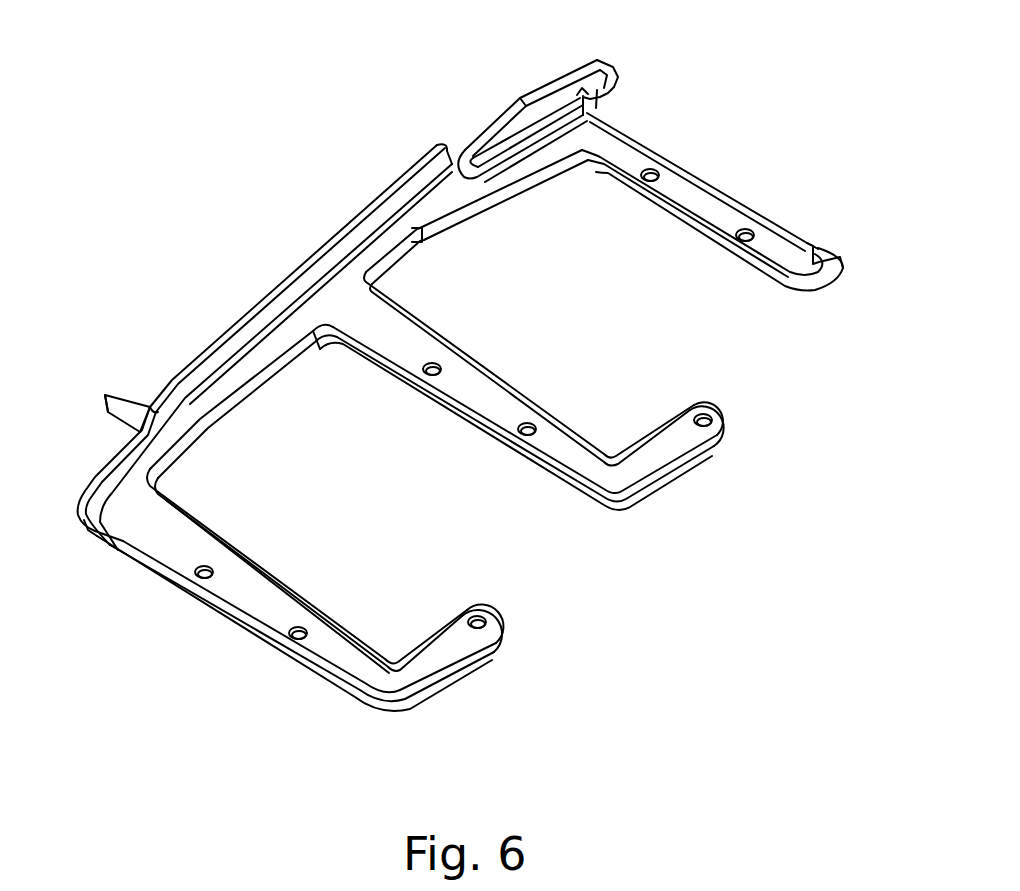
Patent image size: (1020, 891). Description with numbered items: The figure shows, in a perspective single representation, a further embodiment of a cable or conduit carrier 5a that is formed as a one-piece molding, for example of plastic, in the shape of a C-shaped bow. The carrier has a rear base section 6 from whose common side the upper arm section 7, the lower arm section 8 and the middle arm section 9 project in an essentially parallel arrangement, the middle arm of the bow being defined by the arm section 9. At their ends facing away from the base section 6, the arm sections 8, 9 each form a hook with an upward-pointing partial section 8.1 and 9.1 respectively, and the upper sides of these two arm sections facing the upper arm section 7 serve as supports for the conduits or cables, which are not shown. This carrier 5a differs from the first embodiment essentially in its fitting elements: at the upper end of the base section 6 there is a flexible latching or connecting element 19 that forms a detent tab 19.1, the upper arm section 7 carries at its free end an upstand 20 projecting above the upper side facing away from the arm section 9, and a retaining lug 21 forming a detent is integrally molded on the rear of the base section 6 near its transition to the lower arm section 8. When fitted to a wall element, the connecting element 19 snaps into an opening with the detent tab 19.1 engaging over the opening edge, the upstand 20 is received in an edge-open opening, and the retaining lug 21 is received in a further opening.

The conduit carrier 5a is at (296, 153).
The base section 6 is at (303, 268).
The upper arm section 7 is at (688, 196).
The lower arm section 8 is at (258, 612).
The upward-pointing partial section 8.1 is at (440, 640).
The middle arm section 9 is at (483, 392).
The upward-pointing partial section 9.1 is at (668, 452).
The connecting element 19 is at (560, 80).
The detent tab 19.1 is at (618, 95).
The upstand 20 is at (820, 247).
The retaining lug 21 is at (103, 396).